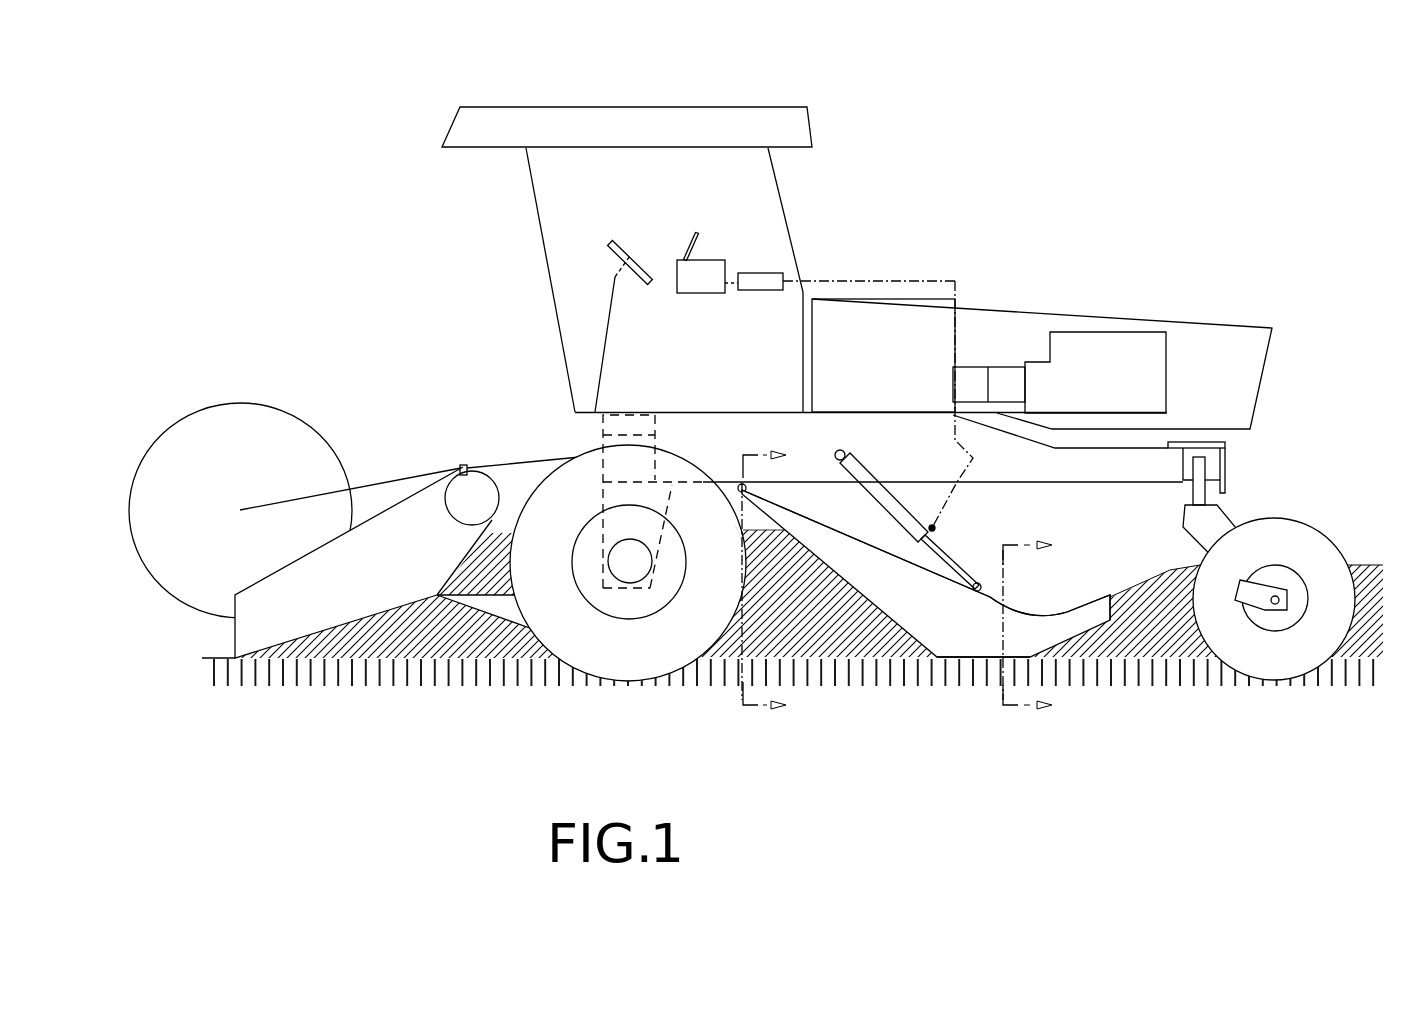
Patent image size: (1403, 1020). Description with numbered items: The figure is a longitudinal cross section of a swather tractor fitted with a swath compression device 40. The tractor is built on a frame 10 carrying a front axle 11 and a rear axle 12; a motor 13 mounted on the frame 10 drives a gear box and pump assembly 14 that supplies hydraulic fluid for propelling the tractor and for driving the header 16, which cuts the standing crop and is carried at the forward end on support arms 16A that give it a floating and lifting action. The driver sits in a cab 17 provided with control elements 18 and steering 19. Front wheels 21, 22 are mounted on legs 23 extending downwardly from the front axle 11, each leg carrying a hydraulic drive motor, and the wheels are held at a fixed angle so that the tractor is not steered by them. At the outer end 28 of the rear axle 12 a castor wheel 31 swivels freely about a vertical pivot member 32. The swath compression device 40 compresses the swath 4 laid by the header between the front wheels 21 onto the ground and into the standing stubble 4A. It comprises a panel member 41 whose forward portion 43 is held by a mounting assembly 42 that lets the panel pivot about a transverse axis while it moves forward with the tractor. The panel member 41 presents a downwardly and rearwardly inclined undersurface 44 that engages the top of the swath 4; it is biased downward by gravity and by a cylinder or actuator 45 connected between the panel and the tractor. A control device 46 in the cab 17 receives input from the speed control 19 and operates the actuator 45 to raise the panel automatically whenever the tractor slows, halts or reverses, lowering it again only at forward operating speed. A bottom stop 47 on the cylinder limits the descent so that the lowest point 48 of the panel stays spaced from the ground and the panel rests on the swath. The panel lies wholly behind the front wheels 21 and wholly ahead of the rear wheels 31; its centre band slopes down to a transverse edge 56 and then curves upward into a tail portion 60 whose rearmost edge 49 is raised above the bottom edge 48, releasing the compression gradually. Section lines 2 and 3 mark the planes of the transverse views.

The frame 10 is at (1020, 273).
The front axle 11 is at (662, 488).
The rear axle 12 is at (1200, 438).
The motor 13 is at (1118, 355).
The gear box and pump assembly 14 is at (968, 387).
The header 16 is at (329, 400).
The support arms 16A is at (435, 603).
The cab 17 is at (763, 215).
The control elements 18 is at (702, 232).
The steering 19 is at (628, 243).
The first wheel 21 is at (564, 486).
The first wheel 22 is at (621, 460).
The legs 23 is at (600, 495).
The outer end of the axle 28 is at (1227, 450).
The castor wheel 31 is at (1304, 547).
The vertical pivot member 32 is at (1197, 480).
The swath compression device 40 is at (890, 622).
The panel member 41 is at (801, 514).
The mounting assembly 42 is at (752, 481).
The forward portion 43 is at (762, 584).
The undersurface 44 is at (823, 532).
The cylinder 45 is at (876, 480).
The control device 46 is at (763, 280).
The bottom stop 47 is at (936, 525).
The lowest point 48 is at (962, 658).
The rear edge 49 is at (1113, 606).
The transverse edge 56 is at (1070, 613).
The tail portion 60 is at (1093, 593).
The swath 4 is at (313, 648).
The stubble 4A is at (243, 684).
The section line II 2 is at (751, 581).
The section line III 3 is at (1014, 631).